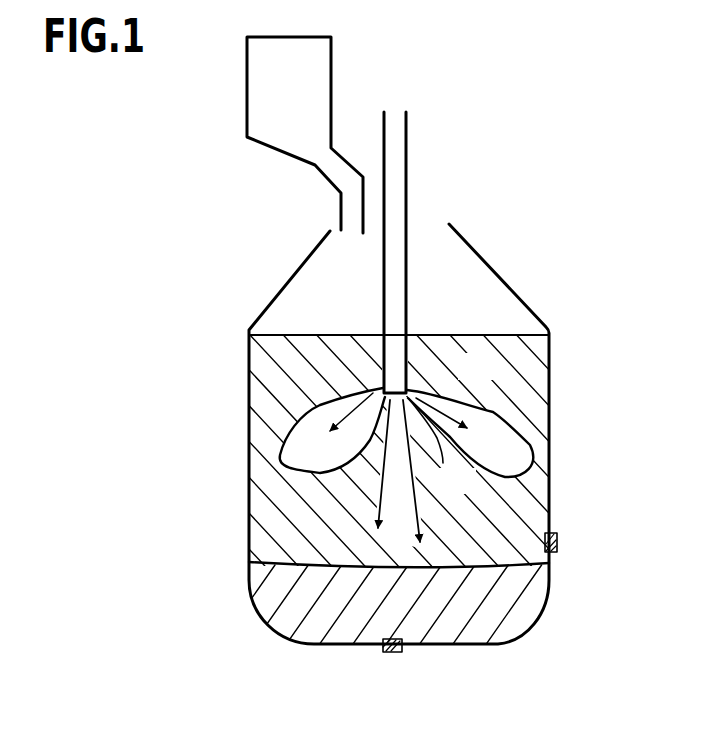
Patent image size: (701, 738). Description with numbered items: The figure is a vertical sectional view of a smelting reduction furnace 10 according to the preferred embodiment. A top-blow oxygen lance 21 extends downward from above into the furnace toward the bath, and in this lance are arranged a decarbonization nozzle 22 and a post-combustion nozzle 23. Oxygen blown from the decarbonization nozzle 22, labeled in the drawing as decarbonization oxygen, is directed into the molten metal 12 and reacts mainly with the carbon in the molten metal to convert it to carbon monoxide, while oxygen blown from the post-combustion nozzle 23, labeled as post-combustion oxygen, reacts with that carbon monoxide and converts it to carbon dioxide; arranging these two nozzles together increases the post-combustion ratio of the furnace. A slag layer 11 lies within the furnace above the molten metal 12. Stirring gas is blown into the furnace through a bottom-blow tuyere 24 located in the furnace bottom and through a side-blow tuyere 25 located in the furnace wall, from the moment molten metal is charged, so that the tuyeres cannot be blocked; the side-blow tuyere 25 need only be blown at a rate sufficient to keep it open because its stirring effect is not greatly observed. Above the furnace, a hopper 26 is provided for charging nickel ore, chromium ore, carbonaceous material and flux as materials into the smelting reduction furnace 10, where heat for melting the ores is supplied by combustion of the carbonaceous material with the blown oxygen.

The smelting reduction furnace 10 is at (568, 325).
The slag layer 11 is at (556, 489).
The molten metal 12 is at (520, 600).
The top-blow oxygen lance 21 is at (407, 146).
The decarbonization nozzle 22 is at (424, 474).
The post-combustion nozzle 23 is at (407, 375).
The bottom-blow tuyere 24 is at (393, 655).
The side-blow tuyere 25 is at (558, 541).
The hopper 26 is at (247, 118).